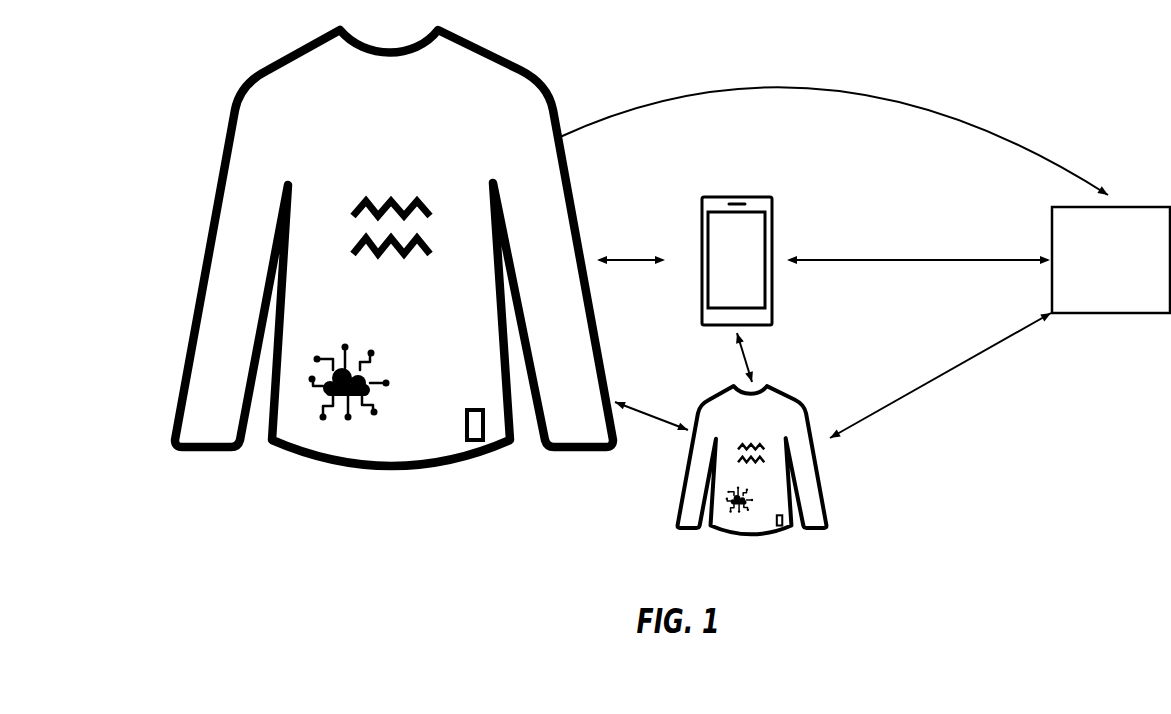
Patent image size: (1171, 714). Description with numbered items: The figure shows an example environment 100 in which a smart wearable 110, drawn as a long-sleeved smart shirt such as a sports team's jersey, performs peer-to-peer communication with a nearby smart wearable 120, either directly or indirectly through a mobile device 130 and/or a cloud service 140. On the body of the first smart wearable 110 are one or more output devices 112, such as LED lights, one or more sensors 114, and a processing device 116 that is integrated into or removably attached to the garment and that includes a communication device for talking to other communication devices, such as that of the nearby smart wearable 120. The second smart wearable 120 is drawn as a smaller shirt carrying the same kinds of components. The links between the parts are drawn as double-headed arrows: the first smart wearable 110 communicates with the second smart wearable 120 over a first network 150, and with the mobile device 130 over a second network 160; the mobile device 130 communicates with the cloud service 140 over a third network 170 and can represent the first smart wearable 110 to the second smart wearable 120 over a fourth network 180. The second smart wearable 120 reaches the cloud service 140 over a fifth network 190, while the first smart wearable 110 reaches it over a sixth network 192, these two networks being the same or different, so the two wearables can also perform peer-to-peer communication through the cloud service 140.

The environment 100 is at (660, 30).
The smart wearable 110 is at (373, 126).
The output devices 112 is at (387, 192).
The sensors 114 is at (355, 353).
The processing device 116 is at (468, 400).
The nearby smart wearable 120 is at (737, 423).
The mobile device 130 is at (720, 263).
The cloud service 140 is at (1130, 303).
The first network 150 is at (640, 408).
The second network 160 is at (625, 258).
The third network 170 is at (902, 258).
The fourth network 180 is at (753, 357).
The fifth network 190 is at (920, 390).
The sixth network 192 is at (927, 105).